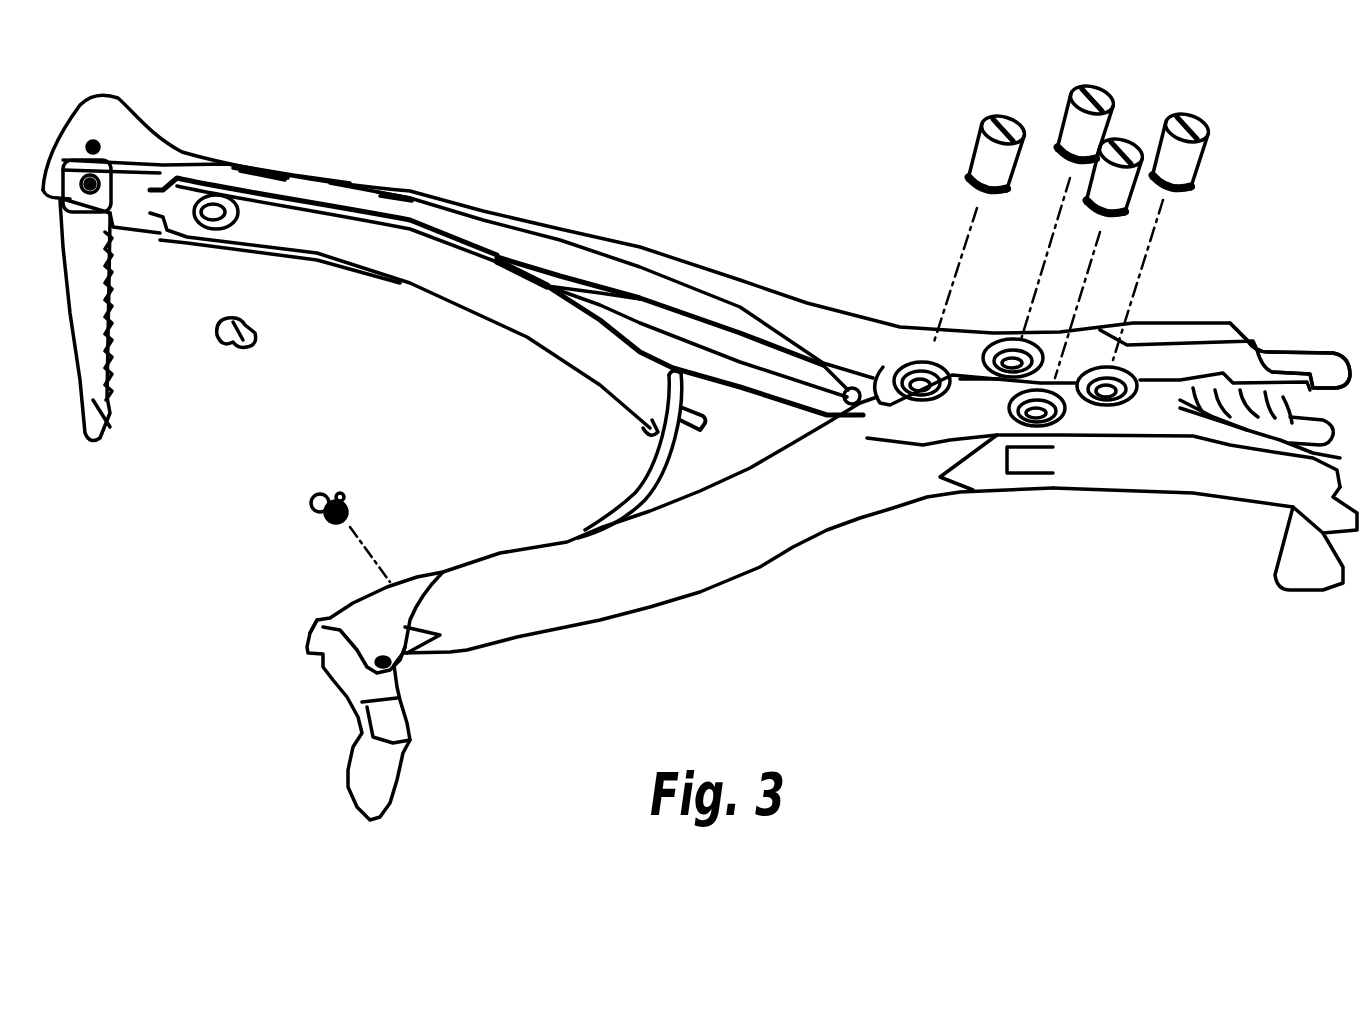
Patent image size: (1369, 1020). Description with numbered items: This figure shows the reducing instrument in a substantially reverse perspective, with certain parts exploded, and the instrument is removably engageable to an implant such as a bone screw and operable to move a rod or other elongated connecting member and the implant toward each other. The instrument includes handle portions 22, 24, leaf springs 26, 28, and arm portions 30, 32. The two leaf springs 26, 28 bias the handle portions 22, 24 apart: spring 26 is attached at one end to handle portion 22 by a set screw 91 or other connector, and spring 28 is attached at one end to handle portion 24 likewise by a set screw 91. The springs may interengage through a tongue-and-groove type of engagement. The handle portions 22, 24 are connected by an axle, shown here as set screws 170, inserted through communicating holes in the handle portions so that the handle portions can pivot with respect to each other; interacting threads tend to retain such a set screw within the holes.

The handle portion 22 is at (483, 204).
The handle portion 24 is at (737, 590).
The spring 26 is at (327, 233).
The spring 28 is at (634, 482).
The arm portion 30 is at (1245, 308).
The arm portion 32 is at (1192, 503).
The set screw 91 is at (243, 345).
The set screws 170 is at (972, 152).